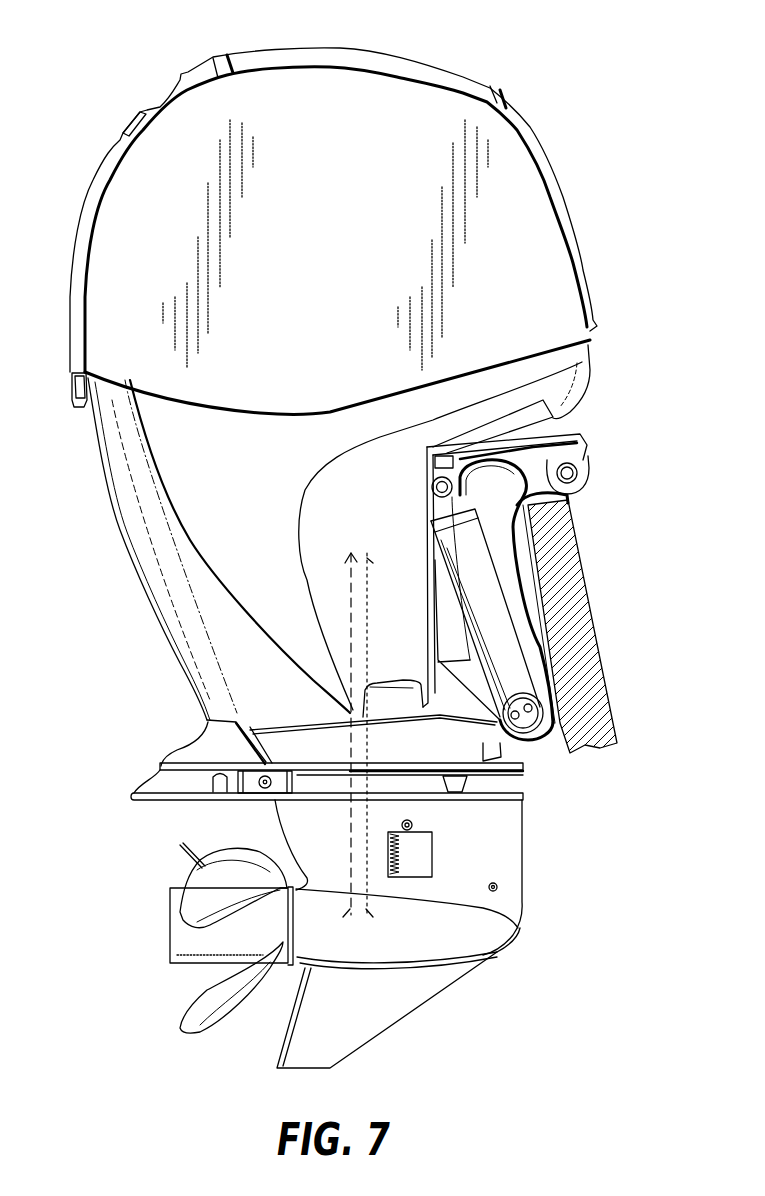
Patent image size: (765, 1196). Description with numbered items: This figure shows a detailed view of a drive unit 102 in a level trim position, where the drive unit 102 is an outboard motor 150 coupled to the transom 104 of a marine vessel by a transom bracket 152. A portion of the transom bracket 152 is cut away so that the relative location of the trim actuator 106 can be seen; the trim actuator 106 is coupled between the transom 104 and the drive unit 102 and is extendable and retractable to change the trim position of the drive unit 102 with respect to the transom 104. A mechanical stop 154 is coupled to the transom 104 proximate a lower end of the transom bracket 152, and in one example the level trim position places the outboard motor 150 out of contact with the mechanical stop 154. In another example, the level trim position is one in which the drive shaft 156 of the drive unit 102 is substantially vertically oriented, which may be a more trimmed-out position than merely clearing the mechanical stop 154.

The drive unit 102 is at (592, 72).
The outboard motor 150 is at (349, 231).
The transom bracket 152 is at (500, 473).
The trim actuator 106 is at (505, 612).
The transom 104 is at (600, 637).
The mechanical stop 154 is at (500, 733).
The drive shaft 156 is at (345, 832).